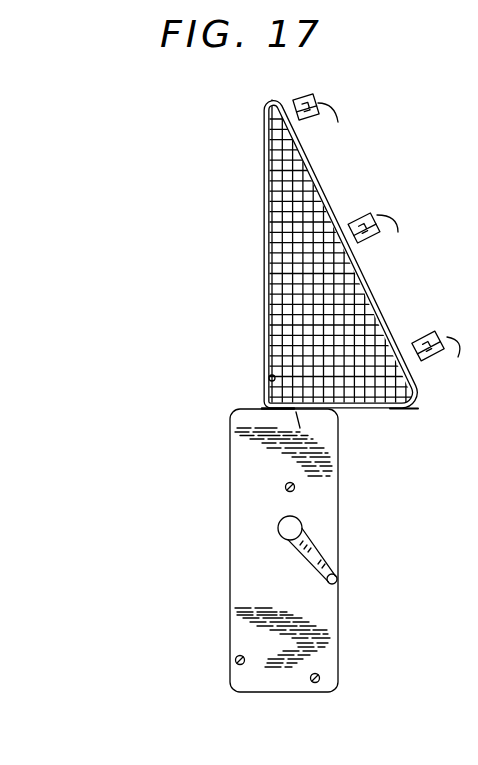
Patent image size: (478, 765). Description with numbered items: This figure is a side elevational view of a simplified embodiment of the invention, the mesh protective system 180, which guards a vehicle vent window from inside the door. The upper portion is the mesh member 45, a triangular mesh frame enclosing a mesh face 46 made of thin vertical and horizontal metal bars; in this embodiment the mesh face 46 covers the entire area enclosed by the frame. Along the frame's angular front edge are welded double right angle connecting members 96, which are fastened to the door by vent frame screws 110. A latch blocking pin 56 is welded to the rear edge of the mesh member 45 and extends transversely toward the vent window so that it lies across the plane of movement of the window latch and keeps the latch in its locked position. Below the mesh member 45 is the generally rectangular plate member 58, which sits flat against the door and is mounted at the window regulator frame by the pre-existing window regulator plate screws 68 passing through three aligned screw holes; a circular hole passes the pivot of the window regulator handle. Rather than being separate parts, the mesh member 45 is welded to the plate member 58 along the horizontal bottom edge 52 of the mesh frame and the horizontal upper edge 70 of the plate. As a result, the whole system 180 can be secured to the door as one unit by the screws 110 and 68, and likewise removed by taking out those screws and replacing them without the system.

The mesh member 45 is at (328, 260).
The mesh face 46 is at (350, 288).
The horizontal bottom edge 52 is at (266, 403).
The latch blocking pin 56 is at (269, 378).
The plate member 58 is at (277, 553).
The screws 68 is at (285, 489).
The horizontal upper edge 70 is at (312, 428).
The double right angle connecting members 96 is at (297, 100).
The vent frame screws 110 is at (398, 245).
The mesh protective system 180 is at (405, 409).